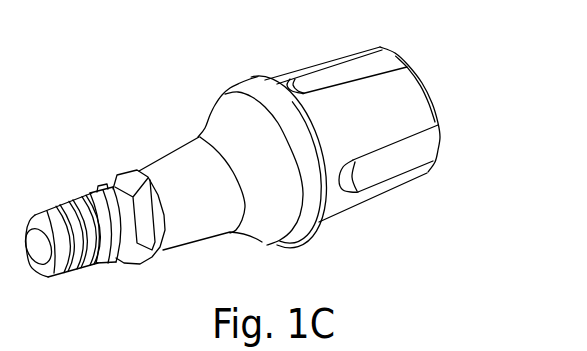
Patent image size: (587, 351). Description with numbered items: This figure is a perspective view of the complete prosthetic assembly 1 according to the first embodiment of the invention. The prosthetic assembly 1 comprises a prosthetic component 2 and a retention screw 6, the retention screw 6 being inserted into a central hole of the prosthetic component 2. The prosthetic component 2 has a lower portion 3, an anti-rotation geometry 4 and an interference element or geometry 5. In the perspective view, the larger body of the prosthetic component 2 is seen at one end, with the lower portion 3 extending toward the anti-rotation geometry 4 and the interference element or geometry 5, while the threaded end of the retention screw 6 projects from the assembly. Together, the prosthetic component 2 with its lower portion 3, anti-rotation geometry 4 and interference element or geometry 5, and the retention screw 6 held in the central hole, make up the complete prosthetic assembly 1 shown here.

The prosthetic assembly 1 is at (401, 41).
The prosthetic component 2 is at (313, 217).
The lower portion 3 is at (197, 218).
The anti-rotation geometry 4 is at (147, 241).
The interference element or geometry 5 is at (96, 188).
The retention screw 6 is at (57, 219).